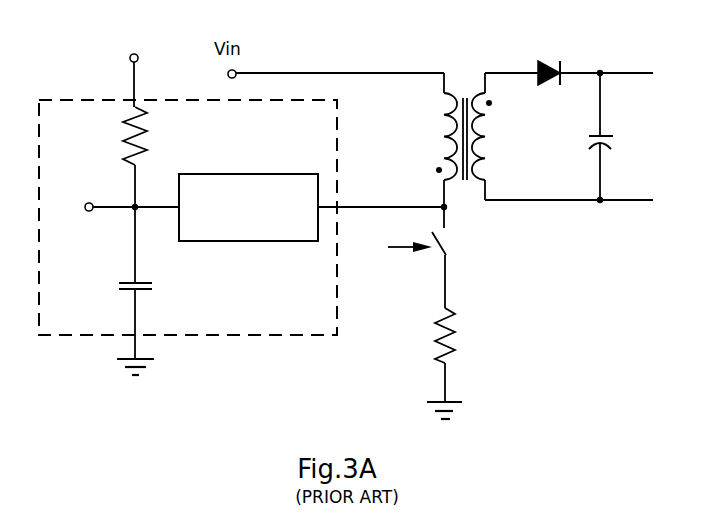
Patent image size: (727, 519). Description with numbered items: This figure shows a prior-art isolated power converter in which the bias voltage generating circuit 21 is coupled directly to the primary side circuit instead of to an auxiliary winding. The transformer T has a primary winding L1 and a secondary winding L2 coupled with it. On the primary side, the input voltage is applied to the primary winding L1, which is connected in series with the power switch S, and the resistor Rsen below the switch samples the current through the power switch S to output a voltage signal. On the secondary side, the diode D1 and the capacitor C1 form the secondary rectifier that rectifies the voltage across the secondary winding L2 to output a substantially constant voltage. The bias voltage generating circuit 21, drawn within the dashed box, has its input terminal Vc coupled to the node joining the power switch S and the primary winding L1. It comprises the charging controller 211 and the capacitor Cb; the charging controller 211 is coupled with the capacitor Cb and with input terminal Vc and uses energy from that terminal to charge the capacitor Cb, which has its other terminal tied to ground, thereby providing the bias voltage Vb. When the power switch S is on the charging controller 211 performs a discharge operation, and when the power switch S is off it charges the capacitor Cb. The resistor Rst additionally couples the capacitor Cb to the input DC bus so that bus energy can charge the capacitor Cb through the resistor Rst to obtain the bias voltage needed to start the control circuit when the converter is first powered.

The bias voltage generating circuit 21 is at (337, 315).
The charging controller 211 is at (248, 207).
The resistor Rst is at (109, 136).
The capacitor Cb is at (112, 284).
The transformer T is at (462, 142).
The primary winding L1 is at (434, 136).
The secondary winding L2 is at (492, 136).
The diode D1 is at (551, 60).
The capacitor C1 is at (584, 139).
The power switch S is at (427, 245).
The resistor Rsen is at (470, 335).